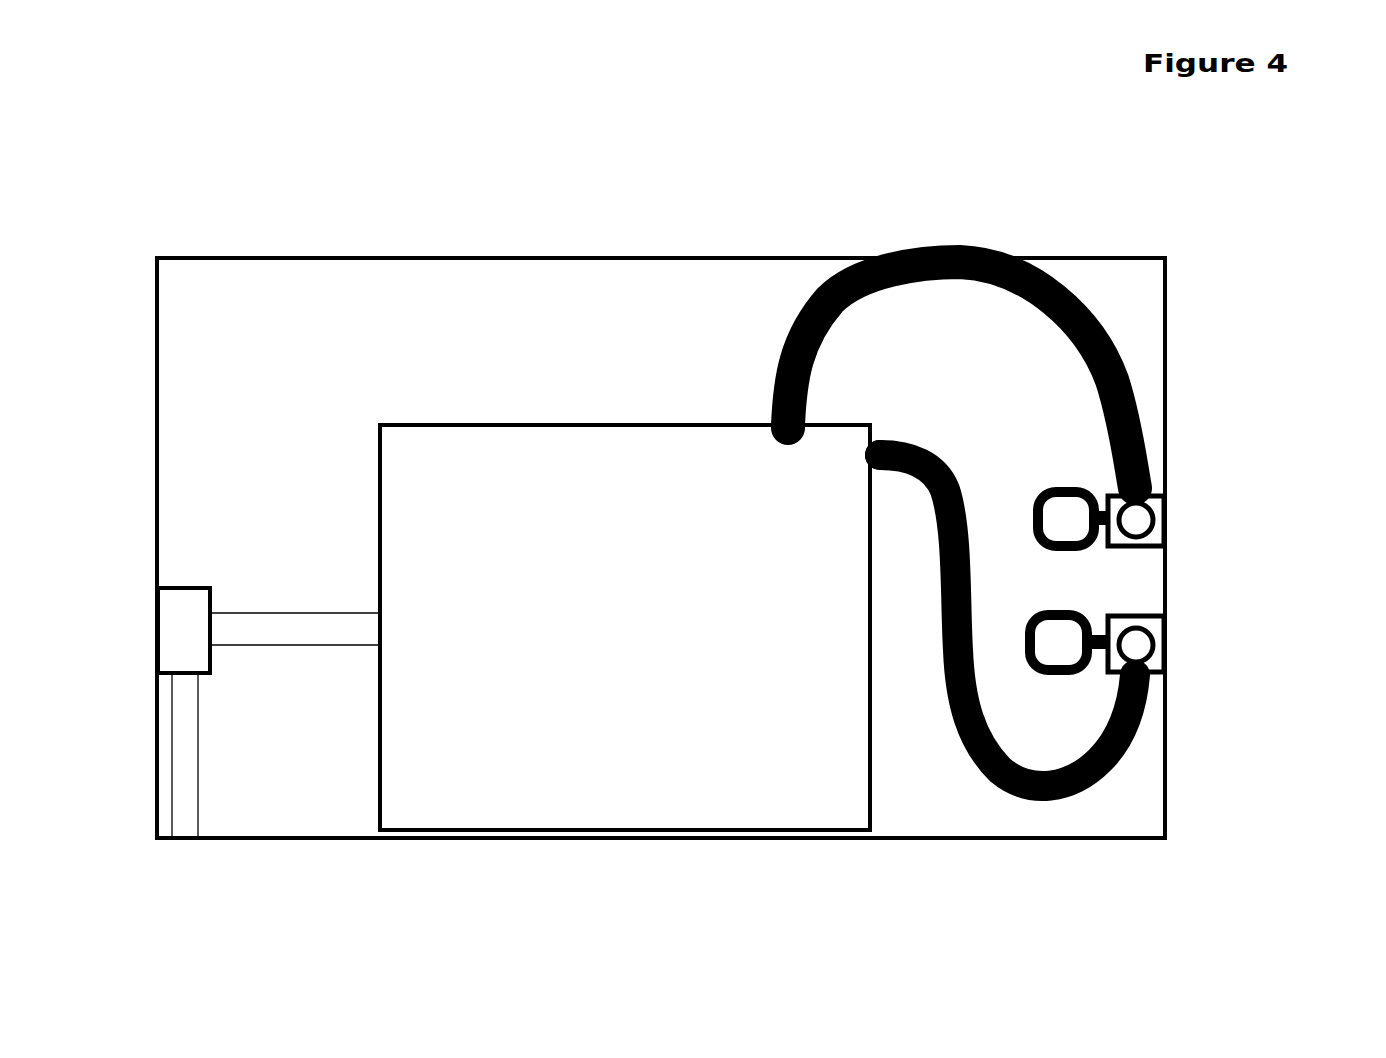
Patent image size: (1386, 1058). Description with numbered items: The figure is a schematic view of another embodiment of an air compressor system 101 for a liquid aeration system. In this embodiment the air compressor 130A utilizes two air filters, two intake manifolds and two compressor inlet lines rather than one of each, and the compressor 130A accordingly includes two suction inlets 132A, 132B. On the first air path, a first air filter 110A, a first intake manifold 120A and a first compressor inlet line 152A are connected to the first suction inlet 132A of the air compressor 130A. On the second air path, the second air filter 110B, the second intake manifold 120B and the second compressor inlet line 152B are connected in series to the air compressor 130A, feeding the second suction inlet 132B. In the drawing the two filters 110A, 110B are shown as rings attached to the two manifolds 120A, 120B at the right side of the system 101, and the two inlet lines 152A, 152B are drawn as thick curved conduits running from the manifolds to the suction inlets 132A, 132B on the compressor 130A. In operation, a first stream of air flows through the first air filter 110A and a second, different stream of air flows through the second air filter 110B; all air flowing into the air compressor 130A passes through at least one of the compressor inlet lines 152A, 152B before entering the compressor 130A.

The air compressor system 101 is at (103, 237).
The air compressor 130A is at (535, 423).
The first suction inlet 132A is at (770, 430).
The second suction inlet 132B is at (867, 445).
The second compressor inlet line 152B is at (1073, 325).
The first compressor inlet line 152A is at (1080, 792).
The second air filter 110B is at (1100, 560).
The second intake manifold 120B is at (1178, 509).
The first air filter 110A is at (1110, 605).
The first intake manifold 120A is at (1182, 665).